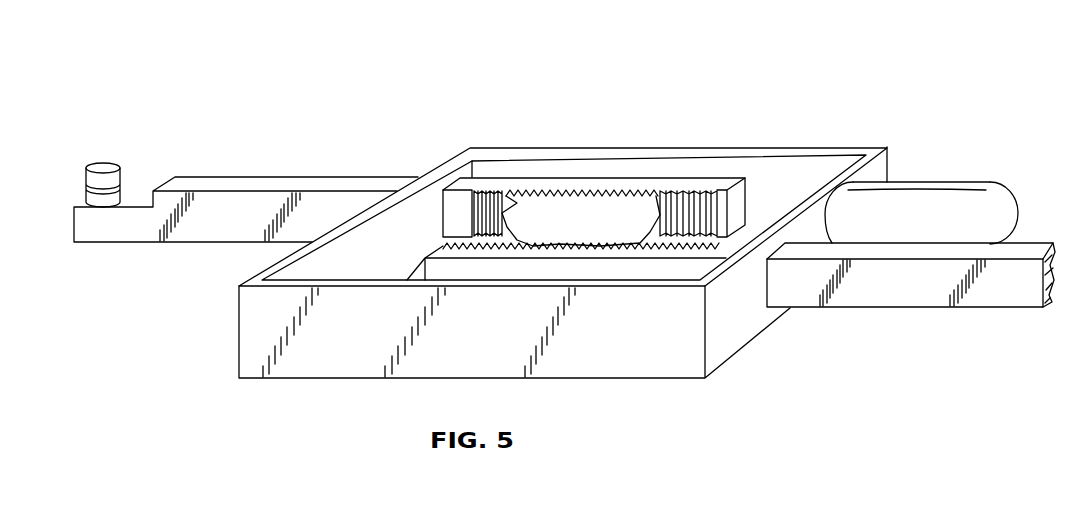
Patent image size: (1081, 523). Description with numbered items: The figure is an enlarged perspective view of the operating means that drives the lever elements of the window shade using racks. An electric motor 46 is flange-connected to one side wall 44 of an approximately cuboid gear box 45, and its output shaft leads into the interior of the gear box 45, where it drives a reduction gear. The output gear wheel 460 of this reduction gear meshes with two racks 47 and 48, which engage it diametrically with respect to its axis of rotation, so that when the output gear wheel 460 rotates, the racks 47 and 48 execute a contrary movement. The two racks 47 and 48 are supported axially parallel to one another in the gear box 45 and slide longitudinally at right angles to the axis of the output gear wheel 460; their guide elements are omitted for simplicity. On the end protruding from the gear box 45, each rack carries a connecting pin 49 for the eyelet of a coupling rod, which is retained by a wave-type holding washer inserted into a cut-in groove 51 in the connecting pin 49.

The side wall 44 is at (873, 171).
The gear box 45 is at (712, 122).
The electric motor 46 is at (940, 207).
The rack 47 is at (500, 185).
The rack 48 is at (533, 268).
The connecting pin 49 is at (107, 165).
The cut-in groove 51 is at (121, 186).
The output gear wheel 460 is at (583, 220).